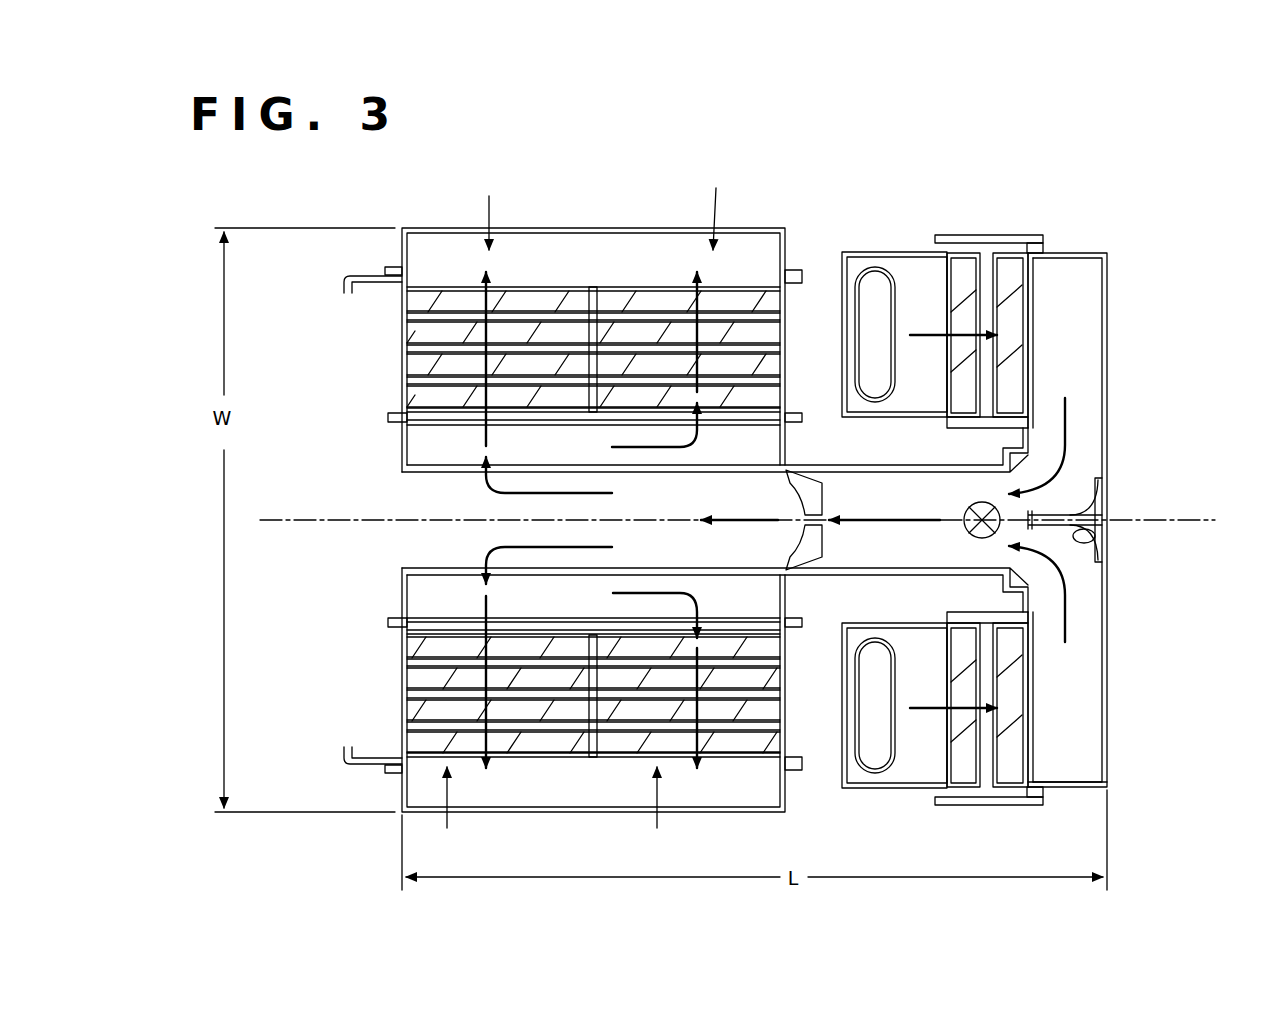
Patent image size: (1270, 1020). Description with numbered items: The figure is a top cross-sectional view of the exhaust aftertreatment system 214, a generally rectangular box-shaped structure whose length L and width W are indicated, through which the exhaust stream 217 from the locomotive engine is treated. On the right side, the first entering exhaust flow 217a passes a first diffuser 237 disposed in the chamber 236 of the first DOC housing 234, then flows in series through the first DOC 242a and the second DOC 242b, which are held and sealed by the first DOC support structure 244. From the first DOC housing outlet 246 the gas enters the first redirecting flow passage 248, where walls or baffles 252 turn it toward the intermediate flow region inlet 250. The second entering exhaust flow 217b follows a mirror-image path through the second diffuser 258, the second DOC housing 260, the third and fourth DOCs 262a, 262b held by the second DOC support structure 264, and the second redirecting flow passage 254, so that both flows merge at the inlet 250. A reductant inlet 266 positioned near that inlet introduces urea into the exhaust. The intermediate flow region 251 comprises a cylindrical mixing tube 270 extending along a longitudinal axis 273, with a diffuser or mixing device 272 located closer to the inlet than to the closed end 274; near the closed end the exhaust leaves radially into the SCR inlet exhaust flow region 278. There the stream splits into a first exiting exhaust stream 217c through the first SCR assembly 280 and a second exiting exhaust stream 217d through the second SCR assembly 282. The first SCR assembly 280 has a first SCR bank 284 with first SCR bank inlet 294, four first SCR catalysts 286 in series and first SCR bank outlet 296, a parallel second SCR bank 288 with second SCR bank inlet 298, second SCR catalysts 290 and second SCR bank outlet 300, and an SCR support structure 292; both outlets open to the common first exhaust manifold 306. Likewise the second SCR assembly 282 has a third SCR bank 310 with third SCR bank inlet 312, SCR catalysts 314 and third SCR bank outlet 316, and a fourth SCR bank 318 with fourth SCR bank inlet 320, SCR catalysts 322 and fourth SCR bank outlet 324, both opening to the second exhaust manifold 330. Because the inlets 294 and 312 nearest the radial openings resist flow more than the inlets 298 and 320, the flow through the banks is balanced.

The exhaust aftertreatment system 214 is at (1137, 338).
The exhaust stream 217 is at (862, 523).
The first entering exhaust flow 217a is at (928, 339).
The second entering exhaust flow 217b is at (930, 706).
The first exiting exhaust stream 217c is at (512, 386).
The second exiting exhaust stream 217d is at (512, 650).
The first DOC housing 234 is at (841, 255).
The chamber 236 is at (910, 261).
The first diffuser 237 is at (870, 266).
The first DOC 242a is at (962, 268).
The second DOC 242b is at (1007, 266).
The first DOC support structure 244 is at (1040, 242).
The first DOC housing outlet 246 is at (1027, 300).
The first redirecting flow passage 248 is at (1081, 318).
The intermediate flow region inlet 250 is at (1037, 574).
The intermediate flow region 251 is at (843, 503).
The walls or baffles 252 is at (1107, 403).
The second redirecting flow passage 254 is at (1087, 657).
The second diffuser 258 is at (877, 774).
The second DOC housing 260 is at (842, 781).
The third DOC 262a is at (967, 774).
The fourth DOC 262b is at (1010, 736).
The second DOC support structure 264 is at (1043, 795).
The reductant inlet 266 is at (1001, 512).
The mixing tube 270 is at (672, 565).
The diffuser or mixing device 272 is at (800, 500).
The longitudinal axis 273 is at (1186, 523).
The closed end 274 is at (398, 564).
The SCR inlet exhaust flow region 278 is at (463, 454).
The first SCR assembly 280 is at (396, 346).
The second SCR assembly 282 is at (396, 673).
The first SCR bank 284 is at (485, 208).
The first SCR catalyst 286 is at (533, 300).
The second SCR bank 288 is at (722, 206).
The second SCR catalyst 290 is at (662, 300).
The SCR support structure 292 is at (592, 288).
The first SCR bank inlet 294 is at (450, 424).
The first SCR bank outlet 296 is at (430, 280).
The second SCR bank inlet 298 is at (763, 424).
The second SCR bank outlet 300 is at (737, 282).
The first exhaust manifold 306 is at (600, 228).
The third SCR bank 310 is at (443, 812).
The third SCR bank inlet 312 is at (510, 618).
The SCR catalysts of third SCR bank 314 is at (423, 740).
The third SCR bank outlet 316 is at (523, 758).
The fourth SCR bank 318 is at (650, 812).
The fourth SCR bank inlet 320 is at (668, 614).
The SCR catalysts of fourth SCR bank 322 is at (640, 742).
The fourth SCR bank outlet 324 is at (740, 757).
The second exhaust manifold 330 is at (557, 818).